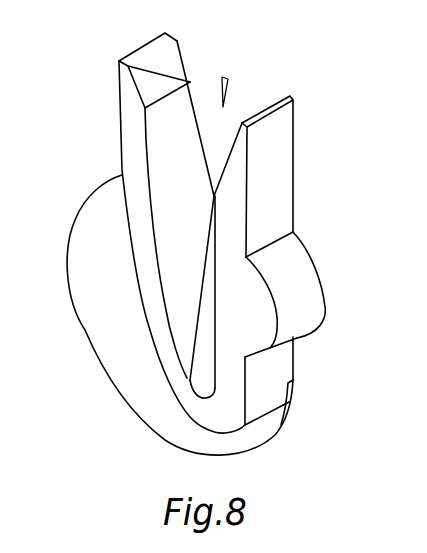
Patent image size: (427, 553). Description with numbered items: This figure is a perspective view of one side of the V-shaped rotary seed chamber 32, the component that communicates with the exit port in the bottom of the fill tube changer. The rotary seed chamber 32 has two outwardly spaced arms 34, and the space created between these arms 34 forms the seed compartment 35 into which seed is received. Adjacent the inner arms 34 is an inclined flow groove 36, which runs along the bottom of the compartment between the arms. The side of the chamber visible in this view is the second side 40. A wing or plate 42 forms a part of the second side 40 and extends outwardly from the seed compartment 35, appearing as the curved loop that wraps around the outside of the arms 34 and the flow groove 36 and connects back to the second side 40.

The V-shaped rotary seed chamber 32 is at (322, 155).
The arms 34 is at (150, 47).
The seed compartment 35 is at (224, 77).
The inclined flow groove 36 is at (200, 382).
The second side 40 is at (235, 235).
The wing or plate 42 is at (83, 257).